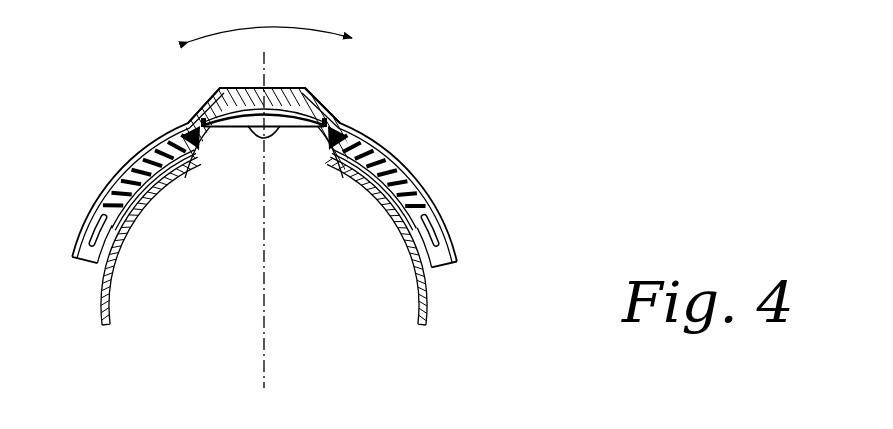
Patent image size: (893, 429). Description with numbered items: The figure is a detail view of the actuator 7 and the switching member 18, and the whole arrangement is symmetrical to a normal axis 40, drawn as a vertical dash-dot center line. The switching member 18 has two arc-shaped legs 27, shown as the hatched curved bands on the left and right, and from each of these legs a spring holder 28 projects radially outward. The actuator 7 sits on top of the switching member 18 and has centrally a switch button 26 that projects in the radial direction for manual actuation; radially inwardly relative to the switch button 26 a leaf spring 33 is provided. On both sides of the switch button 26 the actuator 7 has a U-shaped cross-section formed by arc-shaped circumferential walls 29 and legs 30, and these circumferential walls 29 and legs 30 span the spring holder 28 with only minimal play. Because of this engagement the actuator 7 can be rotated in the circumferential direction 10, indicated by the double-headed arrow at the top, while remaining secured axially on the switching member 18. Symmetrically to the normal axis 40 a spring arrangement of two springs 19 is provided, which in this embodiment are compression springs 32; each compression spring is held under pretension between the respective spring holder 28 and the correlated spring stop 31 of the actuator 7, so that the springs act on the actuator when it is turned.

The actuator 7 is at (297, 92).
The circumferential direction 10 is at (270, 29).
The switching member 18 is at (134, 229).
The springs 19 is at (354, 198).
The switch button 26 is at (233, 89).
The arc-shaped legs 27 is at (111, 315).
The spring holder 28 is at (82, 216).
The circumferential walls 29 is at (70, 247).
The legs 30 is at (83, 262).
The spring stops 31 is at (203, 120).
The compression springs 32 is at (130, 153).
The leaf spring 33 is at (259, 134).
The normal axis 40 is at (262, 363).